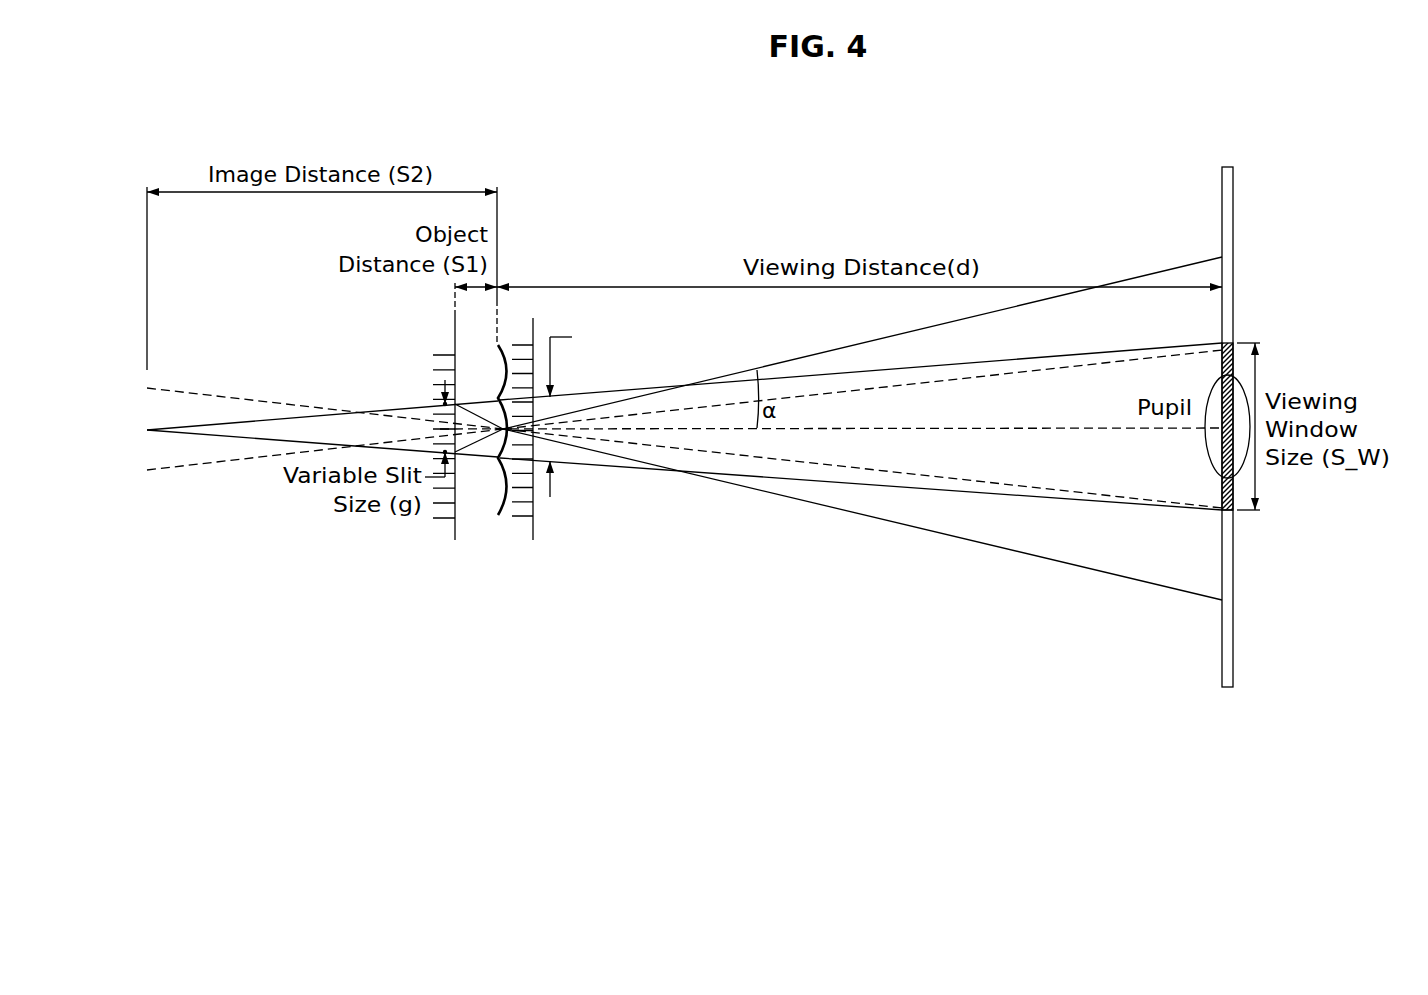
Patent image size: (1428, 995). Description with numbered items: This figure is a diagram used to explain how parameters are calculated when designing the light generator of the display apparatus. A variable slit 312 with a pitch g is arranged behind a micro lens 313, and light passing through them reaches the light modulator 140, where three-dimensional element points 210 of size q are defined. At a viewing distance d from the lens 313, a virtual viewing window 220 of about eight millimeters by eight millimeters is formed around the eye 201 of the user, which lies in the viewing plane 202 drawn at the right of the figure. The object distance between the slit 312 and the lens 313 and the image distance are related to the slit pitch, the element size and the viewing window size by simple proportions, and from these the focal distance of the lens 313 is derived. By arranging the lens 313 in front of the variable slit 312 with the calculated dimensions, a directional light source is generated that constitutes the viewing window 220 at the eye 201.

The variable slit 312 is at (445, 518).
The lens 313 is at (498, 515).
The light modulator 140 is at (528, 508).
The 3D element points 210 is at (655, 412).
The viewing plane 202 is at (1233, 180).
The viewing window 220 is at (1228, 343).
The eye 201 is at (1235, 512).